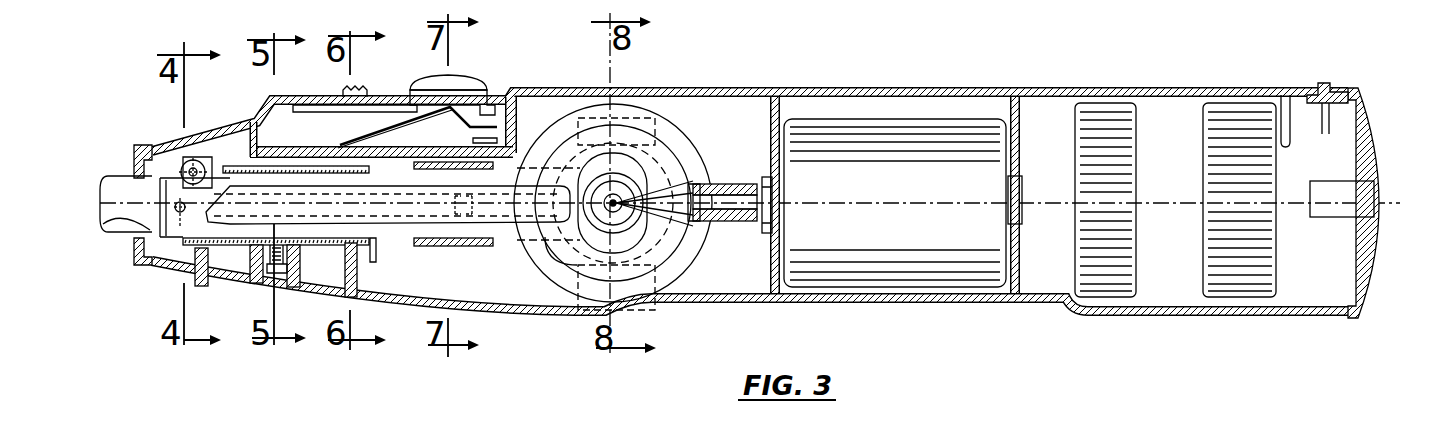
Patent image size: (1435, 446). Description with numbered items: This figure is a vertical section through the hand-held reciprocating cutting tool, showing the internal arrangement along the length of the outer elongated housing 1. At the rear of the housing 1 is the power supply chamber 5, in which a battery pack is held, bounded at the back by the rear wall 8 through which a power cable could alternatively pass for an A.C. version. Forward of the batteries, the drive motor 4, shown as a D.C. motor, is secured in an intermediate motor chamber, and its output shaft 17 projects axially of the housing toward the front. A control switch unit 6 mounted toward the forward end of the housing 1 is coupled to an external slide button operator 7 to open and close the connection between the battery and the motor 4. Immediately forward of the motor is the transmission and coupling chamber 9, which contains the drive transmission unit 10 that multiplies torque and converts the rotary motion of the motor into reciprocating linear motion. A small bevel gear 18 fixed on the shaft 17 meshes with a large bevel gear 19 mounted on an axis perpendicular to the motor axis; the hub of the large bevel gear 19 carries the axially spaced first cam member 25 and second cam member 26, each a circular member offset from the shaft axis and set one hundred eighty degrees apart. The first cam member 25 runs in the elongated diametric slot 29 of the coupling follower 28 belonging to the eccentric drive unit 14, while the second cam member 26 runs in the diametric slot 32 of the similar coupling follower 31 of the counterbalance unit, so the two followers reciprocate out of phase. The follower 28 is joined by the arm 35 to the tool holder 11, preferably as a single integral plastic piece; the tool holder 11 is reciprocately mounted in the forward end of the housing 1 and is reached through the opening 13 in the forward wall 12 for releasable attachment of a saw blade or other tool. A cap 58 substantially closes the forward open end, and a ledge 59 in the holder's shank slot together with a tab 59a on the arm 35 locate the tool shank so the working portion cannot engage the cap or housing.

The housing 1 is at (1013, 84).
The drive motor 4 is at (906, 180).
The power supply chamber 5 is at (1179, 242).
The control switch unit 6 is at (388, 72).
The slide button operator 7 is at (462, 75).
The rear wall 8 is at (1381, 238).
The transmission and coupling chamber 9 is at (752, 134).
The drive transmission unit 10 is at (698, 160).
The tool holder 11 is at (173, 226).
The forward wall 12 is at (137, 162).
The opening 13 is at (103, 224).
The eccentric drive unit 14 is at (555, 252).
The output shaft 17 is at (729, 221).
The small bevel gear 18 is at (734, 186).
The large bevel gear 19 is at (660, 157).
The first cam member 25 is at (579, 179).
The second cam member 26 is at (639, 162).
The coupling follower 28 is at (696, 248).
The elongated diametric slot 29 is at (674, 293).
The coupling follower 31 is at (667, 148).
The elongated diametric slot 32 is at (603, 179).
The arm 35 is at (384, 240).
The cap 58 is at (165, 152).
The ledge 59 is at (221, 226).
The tab 59a is at (452, 210).